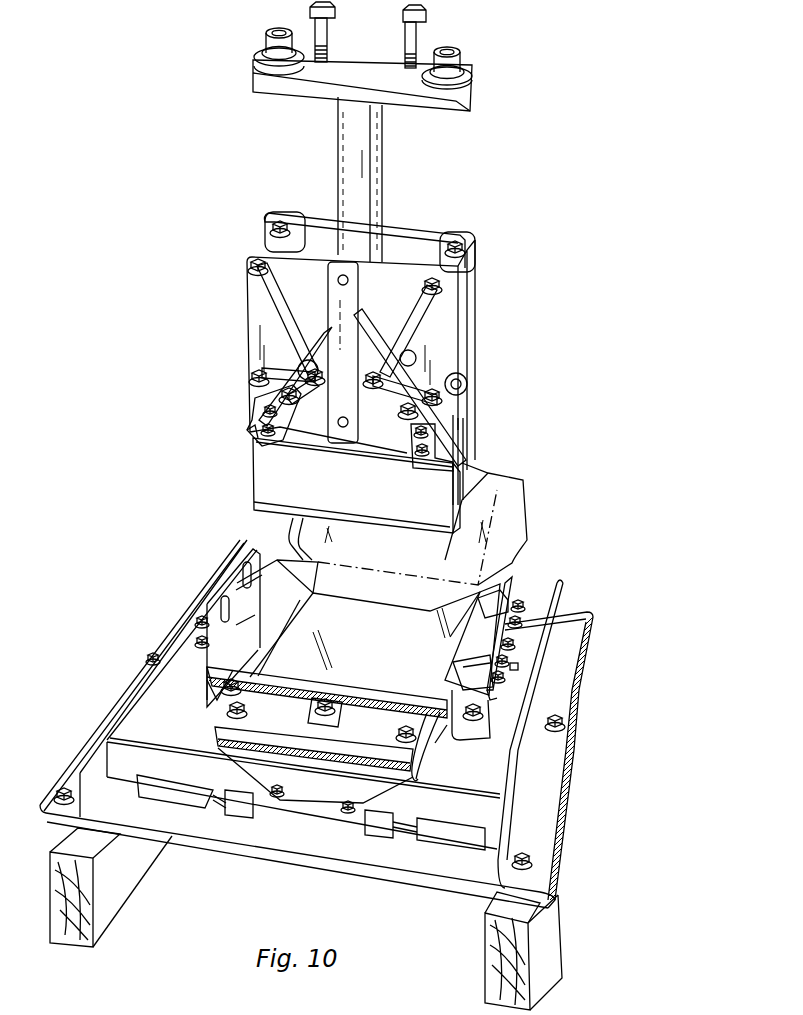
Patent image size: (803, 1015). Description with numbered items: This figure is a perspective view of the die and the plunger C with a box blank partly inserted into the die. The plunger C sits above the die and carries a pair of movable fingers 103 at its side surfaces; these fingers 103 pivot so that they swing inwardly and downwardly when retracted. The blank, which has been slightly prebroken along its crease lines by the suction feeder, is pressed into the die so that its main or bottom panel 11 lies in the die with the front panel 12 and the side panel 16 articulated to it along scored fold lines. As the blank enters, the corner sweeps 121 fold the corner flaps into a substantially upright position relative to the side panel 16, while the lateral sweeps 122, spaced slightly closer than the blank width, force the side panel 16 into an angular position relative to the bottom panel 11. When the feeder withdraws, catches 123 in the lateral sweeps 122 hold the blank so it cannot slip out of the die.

The plunger C is at (403, 323).
The movable fingers 103 is at (258, 423).
The bottom panel 11 is at (343, 655).
The front panel 12 is at (472, 662).
The side panel 16 is at (255, 600).
The corner sweeps 121 is at (500, 598).
The lateral sweeps 122 is at (233, 580).
The catches 123 is at (250, 578).